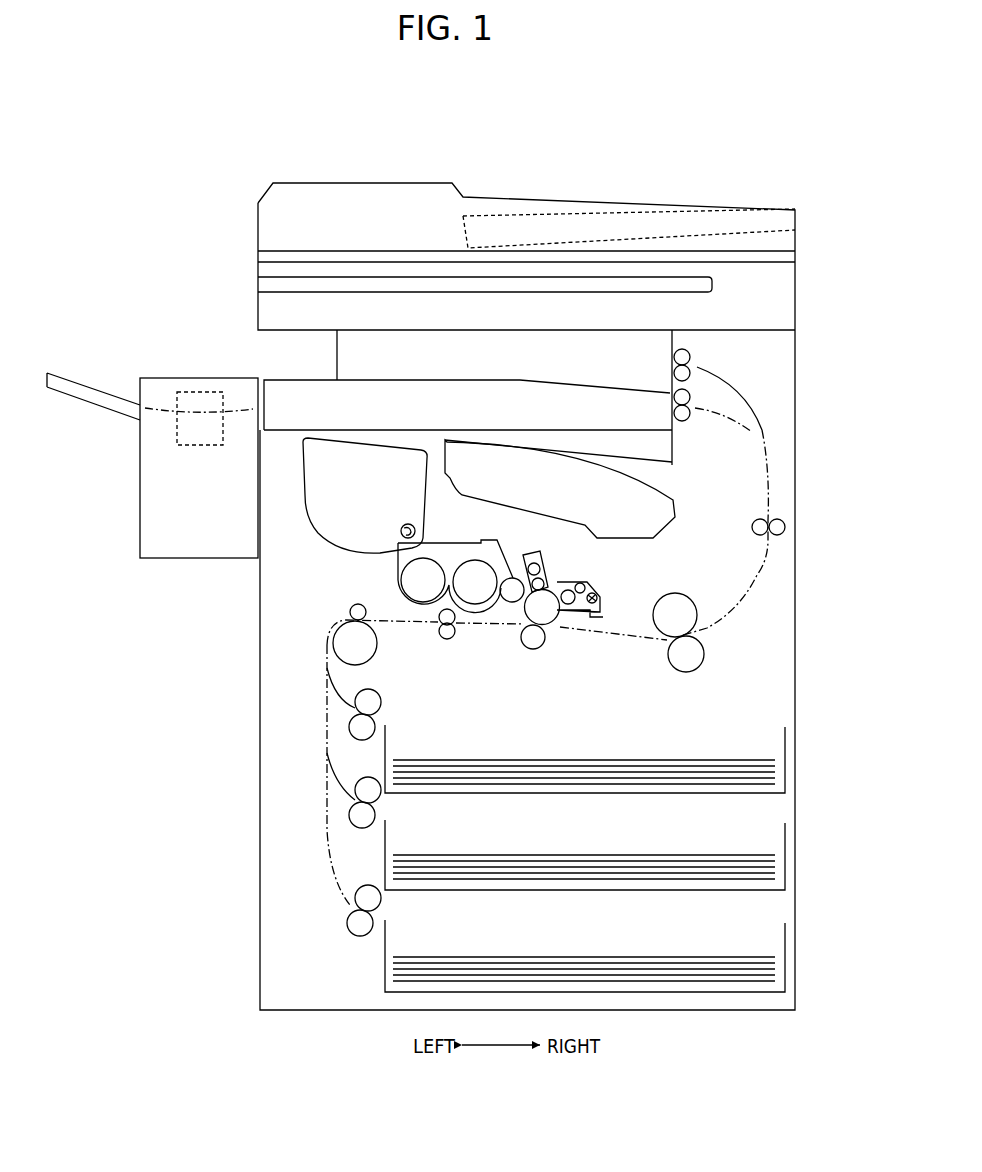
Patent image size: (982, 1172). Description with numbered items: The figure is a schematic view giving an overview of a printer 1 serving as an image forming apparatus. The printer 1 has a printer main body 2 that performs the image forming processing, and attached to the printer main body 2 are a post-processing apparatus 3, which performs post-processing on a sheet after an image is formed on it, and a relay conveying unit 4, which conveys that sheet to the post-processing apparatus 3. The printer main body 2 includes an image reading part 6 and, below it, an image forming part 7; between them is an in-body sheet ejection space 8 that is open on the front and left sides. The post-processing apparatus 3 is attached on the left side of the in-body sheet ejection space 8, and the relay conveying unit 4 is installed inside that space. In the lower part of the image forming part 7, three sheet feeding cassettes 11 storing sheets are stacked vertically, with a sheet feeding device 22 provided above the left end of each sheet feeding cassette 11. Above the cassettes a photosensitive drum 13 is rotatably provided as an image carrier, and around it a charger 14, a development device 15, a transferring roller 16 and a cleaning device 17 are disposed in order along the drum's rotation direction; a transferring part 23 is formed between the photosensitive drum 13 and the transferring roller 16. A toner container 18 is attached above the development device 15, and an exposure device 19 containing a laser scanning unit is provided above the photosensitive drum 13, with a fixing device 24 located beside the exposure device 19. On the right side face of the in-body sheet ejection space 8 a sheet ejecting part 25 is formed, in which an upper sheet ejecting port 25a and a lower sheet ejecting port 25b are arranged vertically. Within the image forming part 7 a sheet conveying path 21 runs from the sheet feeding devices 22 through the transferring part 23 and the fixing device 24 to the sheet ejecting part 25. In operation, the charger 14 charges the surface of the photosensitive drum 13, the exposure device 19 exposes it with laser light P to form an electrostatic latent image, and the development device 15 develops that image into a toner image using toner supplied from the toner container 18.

The printer 1 is at (366, 148).
The printer main body 2 is at (255, 241).
The post-processing apparatus 3 is at (148, 377).
The relay conveying unit 4 is at (273, 379).
The image reading part 6 is at (800, 242).
The image forming part 7 is at (799, 562).
The in-body sheet ejection space 8 is at (297, 352).
The sheet feeding cassette 11 is at (778, 752).
The photosensitive drum 13 is at (552, 588).
The charger 14 is at (531, 553).
The development device 15 is at (403, 572).
The transferring roller 16 is at (532, 650).
The cleaning device 17 is at (599, 584).
The toner container 18 is at (322, 523).
The exposure device 19 is at (640, 483).
The sheet conveying path 21 is at (758, 594).
The sheet feeding device 22 is at (378, 715).
The transferring part 23 is at (547, 632).
The fixing device 24 is at (660, 650).
The sheet ejecting part 25 is at (702, 355).
The upper sheet ejecting port 25a is at (666, 364).
The lower sheet ejecting port 25b is at (660, 403).
The laser light P is at (529, 571).